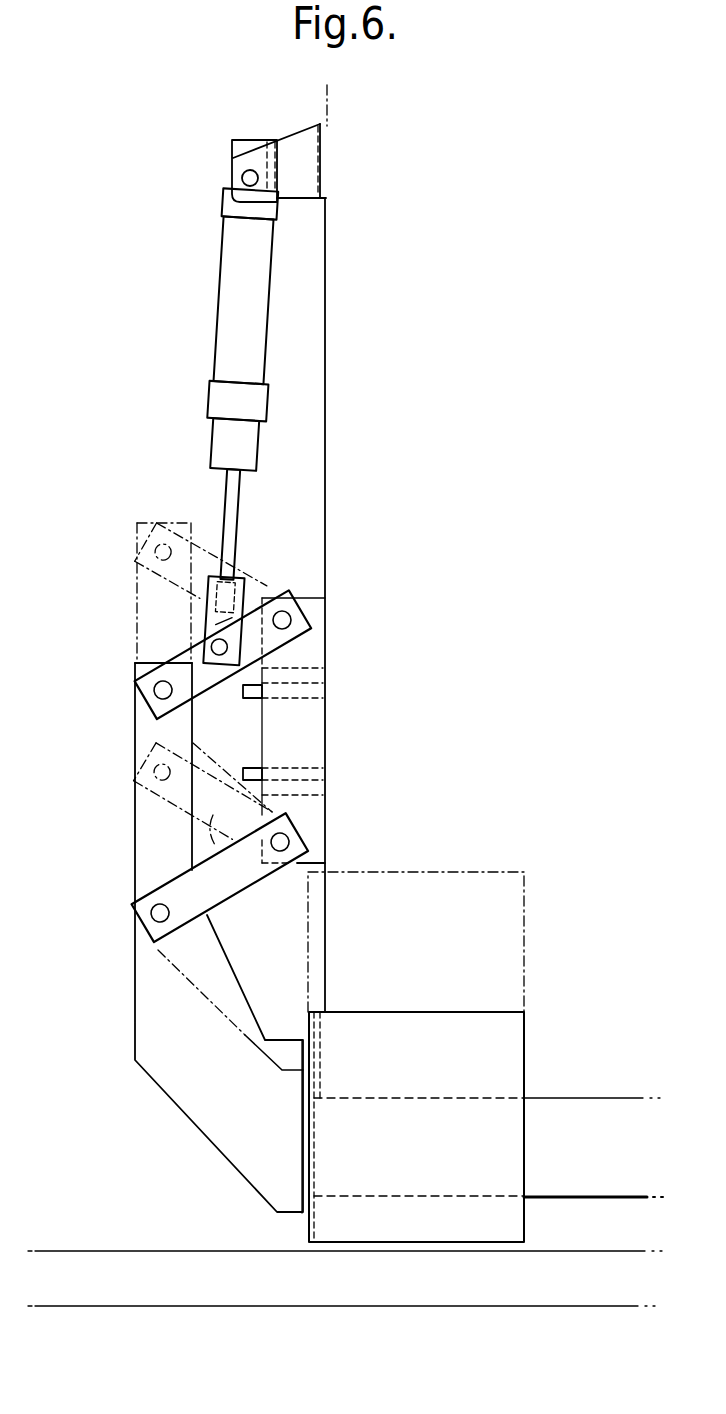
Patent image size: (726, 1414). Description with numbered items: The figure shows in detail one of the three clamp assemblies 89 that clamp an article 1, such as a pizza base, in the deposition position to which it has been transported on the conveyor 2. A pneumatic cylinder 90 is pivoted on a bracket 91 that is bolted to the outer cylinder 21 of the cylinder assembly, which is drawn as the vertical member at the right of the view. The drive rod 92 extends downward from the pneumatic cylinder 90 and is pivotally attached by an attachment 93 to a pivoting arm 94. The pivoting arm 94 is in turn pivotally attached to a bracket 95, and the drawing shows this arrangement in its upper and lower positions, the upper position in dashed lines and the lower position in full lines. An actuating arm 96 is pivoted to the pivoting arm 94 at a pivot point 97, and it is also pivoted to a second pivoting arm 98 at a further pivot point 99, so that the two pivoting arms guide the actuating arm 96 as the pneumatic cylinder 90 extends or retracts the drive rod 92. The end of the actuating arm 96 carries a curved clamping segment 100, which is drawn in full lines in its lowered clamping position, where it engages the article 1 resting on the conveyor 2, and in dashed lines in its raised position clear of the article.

The article 1 is at (580, 1217).
The conveyor 2 is at (170, 1280).
The outer cylinder 21 is at (326, 486).
The clamp assembly 89 is at (96, 699).
The pneumatic cylinder 90 is at (221, 307).
The bracket 91 is at (288, 137).
The drive rod 92 is at (223, 490).
The attachment 93 is at (212, 637).
The pivoting arm 94 is at (251, 611).
The bracket 95 is at (316, 597).
The actuating arm 96 is at (134, 948).
The pivot point 97 is at (136, 712).
The second pivoting arm 98 is at (240, 880).
The pivot point 99 is at (152, 897).
The curved clamping segment 100 is at (330, 1130).